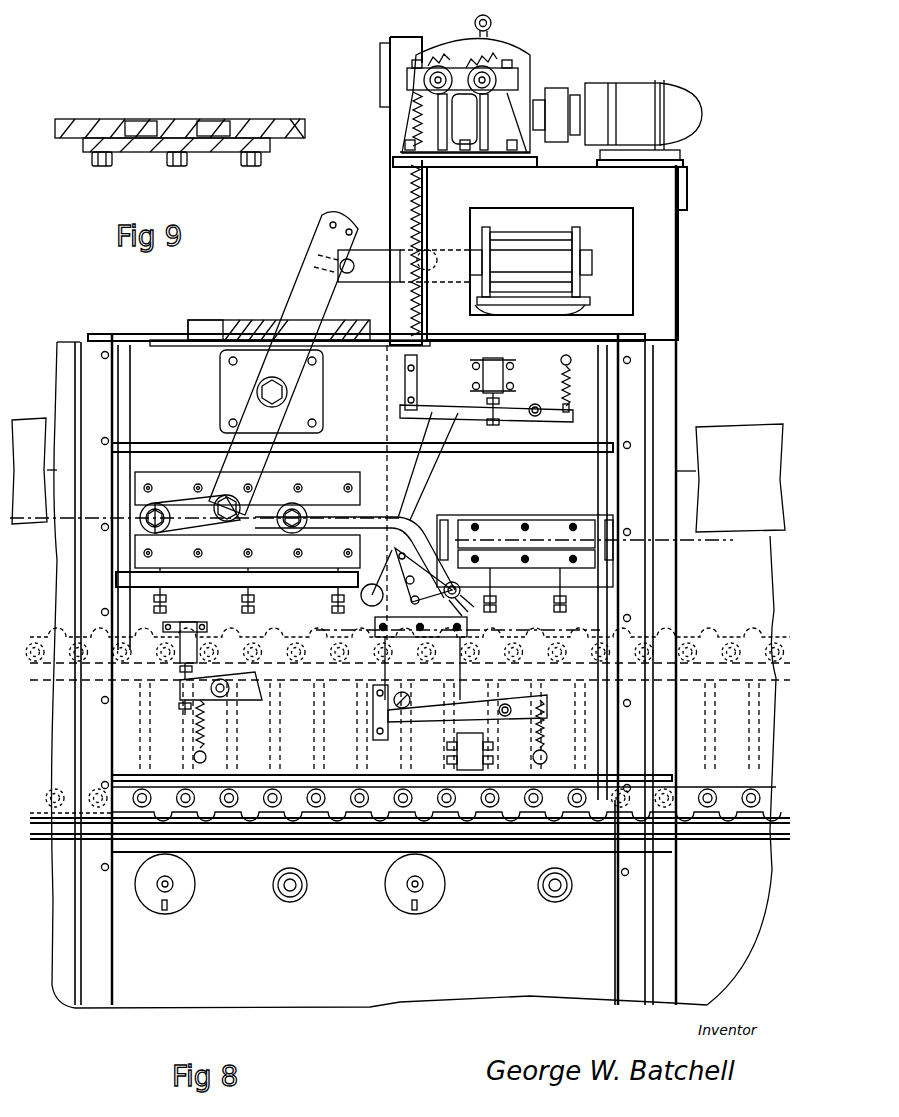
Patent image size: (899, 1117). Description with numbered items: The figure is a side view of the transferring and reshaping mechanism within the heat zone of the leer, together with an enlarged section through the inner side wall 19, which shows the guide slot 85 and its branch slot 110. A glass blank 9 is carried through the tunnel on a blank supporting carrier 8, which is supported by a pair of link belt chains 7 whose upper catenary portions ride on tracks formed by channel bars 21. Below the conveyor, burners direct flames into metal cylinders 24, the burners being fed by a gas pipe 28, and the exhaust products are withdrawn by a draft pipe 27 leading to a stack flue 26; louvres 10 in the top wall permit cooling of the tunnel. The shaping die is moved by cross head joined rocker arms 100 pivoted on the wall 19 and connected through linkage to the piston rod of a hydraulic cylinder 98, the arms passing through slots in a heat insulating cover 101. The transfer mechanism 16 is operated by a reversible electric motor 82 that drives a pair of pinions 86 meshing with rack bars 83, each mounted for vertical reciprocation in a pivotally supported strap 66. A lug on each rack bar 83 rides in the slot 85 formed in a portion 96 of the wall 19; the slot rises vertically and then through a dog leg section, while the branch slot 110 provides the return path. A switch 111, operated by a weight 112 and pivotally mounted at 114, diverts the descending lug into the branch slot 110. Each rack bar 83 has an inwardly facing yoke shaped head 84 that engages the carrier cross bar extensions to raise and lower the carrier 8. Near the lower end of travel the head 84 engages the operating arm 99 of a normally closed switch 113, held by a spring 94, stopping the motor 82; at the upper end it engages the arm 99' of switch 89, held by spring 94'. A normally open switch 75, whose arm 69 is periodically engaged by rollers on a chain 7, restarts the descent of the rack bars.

In FIG. 8, the link belt chain 7 is at (345, 820).
In FIG. 8, the blank supporting carrier 8 is at (362, 706).
In FIG. 8, the glass blank 9 is at (323, 633).
In FIG. 8, the louvre 10 is at (29, 507).
In FIG. 8, the transfer mechanism 16 is at (490, 78).
In FIG. 9, the inner side wall 19 is at (286, 124).
In FIG. 8, the inner side wall 19 is at (740, 612).
In FIG. 8, the channel bar 21 is at (513, 830).
In FIG. 8, the metal cylinder 24 is at (185, 882).
In FIG. 8, the stack flue 26 is at (30, 430).
In FIG. 8, the draft pipe 27 is at (305, 895).
In FIG. 8, the pipe 28 is at (170, 888).
In FIG. 8, the strap 66 is at (398, 88).
In FIG. 8, the arm 69 is at (240, 692).
In FIG. 8, the switch 75 is at (188, 624).
In FIG. 8, the reversible electric motor 82 is at (672, 95).
In FIG. 8, the rack bar 83 is at (400, 193).
In FIG. 8, the head 84 is at (405, 708).
In FIG. 9, the slot 85 is at (140, 120).
In FIG. 8, the slot 85 is at (432, 490).
In FIG. 8, the pinion 86 is at (412, 68).
In FIG. 8, the switch 89 is at (483, 376).
In FIG. 8, the spring 94 is at (551, 732).
In FIG. 8, the spring 94' is at (549, 383).
In FIG. 8, the wall portion 96 is at (428, 513).
In FIG. 8, the cylinder 98 is at (555, 262).
In FIG. 8, the operating arm 99 is at (467, 722).
In FIG. 8, the operating arm 99' is at (486, 399).
In FIG. 8, the rocker arm 100 is at (278, 324).
In FIG. 8, the heat insulating cover 101 is at (205, 320).
In FIG. 9, the branch slot 110 is at (215, 122).
In FIG. 8, the branch slot 110 is at (440, 605).
In FIG. 8, the switch 111 is at (392, 575).
In FIG. 8, the weight 112 is at (368, 600).
In FIG. 8, the switch 113 is at (470, 750).
In FIG. 8, the pivot 114 is at (496, 596).